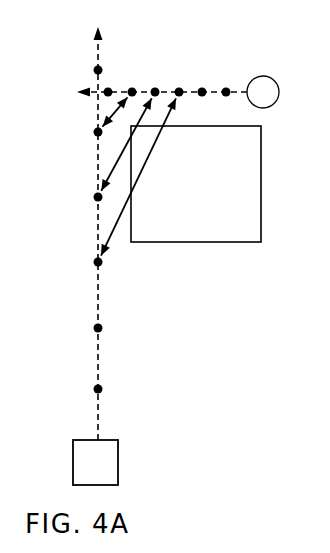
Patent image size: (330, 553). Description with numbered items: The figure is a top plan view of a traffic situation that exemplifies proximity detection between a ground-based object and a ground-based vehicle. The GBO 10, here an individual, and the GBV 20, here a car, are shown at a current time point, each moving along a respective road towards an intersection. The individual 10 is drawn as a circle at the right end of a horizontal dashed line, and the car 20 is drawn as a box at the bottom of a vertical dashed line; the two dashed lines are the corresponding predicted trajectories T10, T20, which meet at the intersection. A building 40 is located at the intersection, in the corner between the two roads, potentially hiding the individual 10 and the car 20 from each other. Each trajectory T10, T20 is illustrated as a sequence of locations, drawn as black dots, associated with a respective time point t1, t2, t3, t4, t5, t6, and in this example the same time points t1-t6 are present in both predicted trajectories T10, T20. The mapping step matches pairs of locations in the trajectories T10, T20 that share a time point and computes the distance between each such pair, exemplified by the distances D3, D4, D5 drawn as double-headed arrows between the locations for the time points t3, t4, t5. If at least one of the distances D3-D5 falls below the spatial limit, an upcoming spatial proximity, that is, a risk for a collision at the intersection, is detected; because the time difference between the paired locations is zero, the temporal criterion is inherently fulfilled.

The GBO 10 is at (279, 92).
The GBV 20 is at (118, 462).
The building 40 is at (220, 243).
The predicted trajectory T10 is at (236, 90).
The predicted trajectory T20 is at (98, 290).
The distance D3 is at (142, 170).
The distance D4 is at (129, 141).
The distance D5 is at (106, 117).
The time point t1 is at (97, 389).
The time point t2 is at (97, 328).
The time point t3 is at (97, 262).
The time point t4 is at (97, 197).
The time point t5 is at (97, 132).
The time point t6 is at (97, 70).